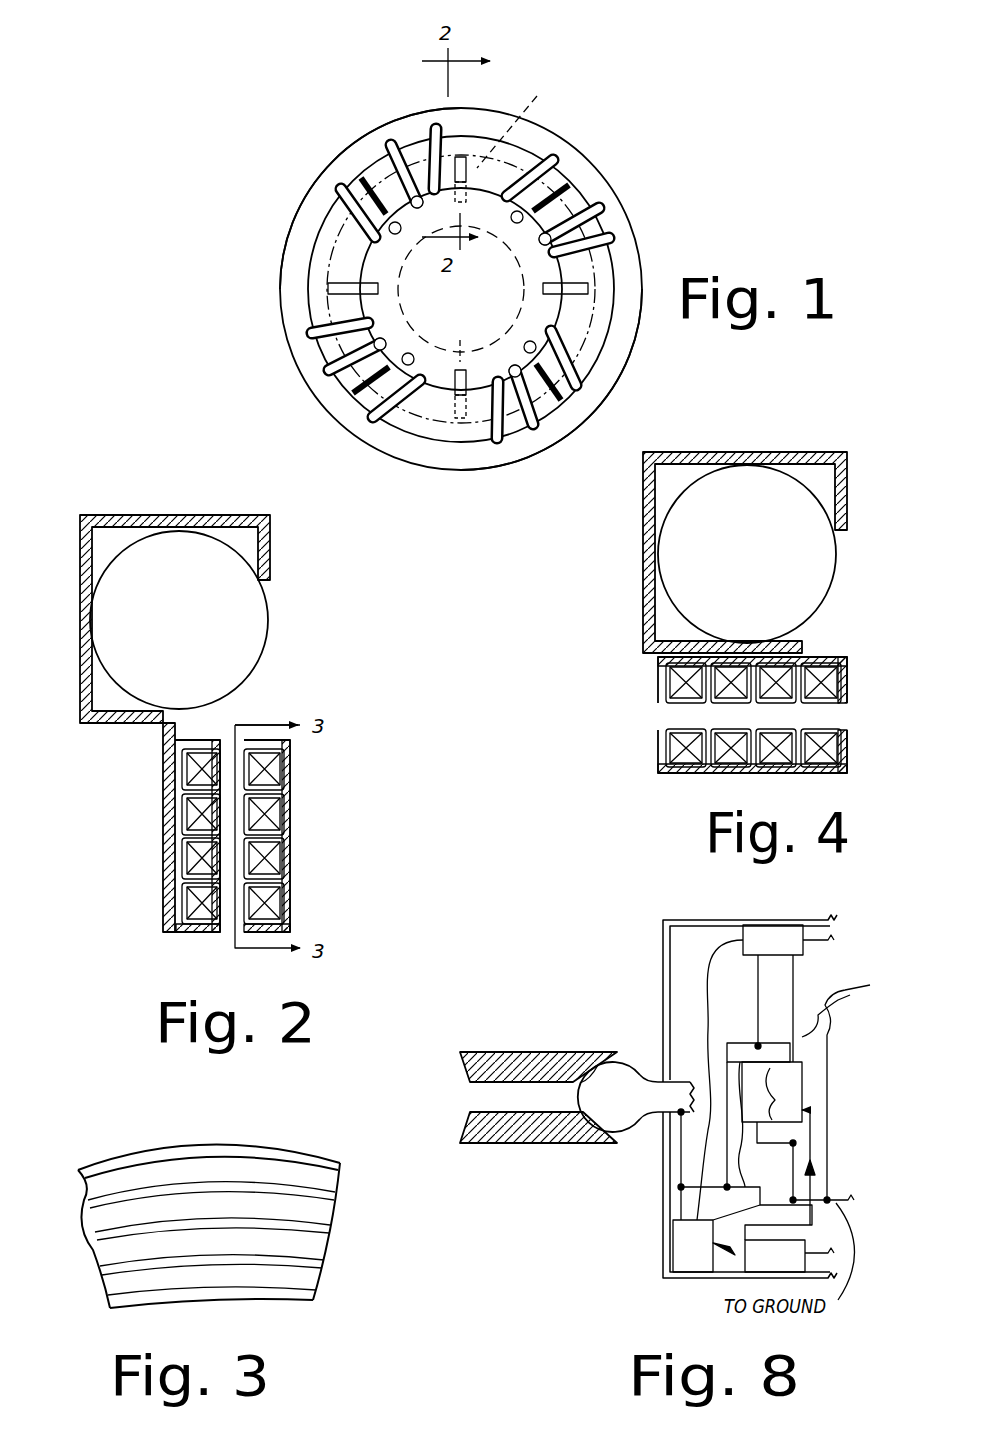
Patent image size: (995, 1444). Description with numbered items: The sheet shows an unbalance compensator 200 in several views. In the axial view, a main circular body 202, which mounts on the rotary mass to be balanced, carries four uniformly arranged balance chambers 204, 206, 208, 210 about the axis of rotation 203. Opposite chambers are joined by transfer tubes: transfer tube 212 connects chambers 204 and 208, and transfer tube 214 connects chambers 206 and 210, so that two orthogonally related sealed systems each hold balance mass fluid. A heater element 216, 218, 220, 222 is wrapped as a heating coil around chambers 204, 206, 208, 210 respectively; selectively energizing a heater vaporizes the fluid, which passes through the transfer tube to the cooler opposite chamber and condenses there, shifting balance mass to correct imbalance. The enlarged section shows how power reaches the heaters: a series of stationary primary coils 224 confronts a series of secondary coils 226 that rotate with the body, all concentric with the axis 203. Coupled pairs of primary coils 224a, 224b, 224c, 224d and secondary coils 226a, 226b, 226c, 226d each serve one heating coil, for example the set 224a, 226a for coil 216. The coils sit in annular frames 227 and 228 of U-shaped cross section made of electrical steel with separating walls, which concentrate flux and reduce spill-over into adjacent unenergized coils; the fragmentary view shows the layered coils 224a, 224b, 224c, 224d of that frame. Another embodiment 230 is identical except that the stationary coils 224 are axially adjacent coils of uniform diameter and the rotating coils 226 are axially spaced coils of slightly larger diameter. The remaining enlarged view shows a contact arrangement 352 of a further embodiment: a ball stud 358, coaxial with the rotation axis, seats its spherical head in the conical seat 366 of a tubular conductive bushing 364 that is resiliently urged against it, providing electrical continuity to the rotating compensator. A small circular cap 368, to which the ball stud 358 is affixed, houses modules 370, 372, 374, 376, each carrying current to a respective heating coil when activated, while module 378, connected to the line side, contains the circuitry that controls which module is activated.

In FIG. 1, the unbalance compensator 200 is at (722, 208).
In FIG. 2, the unbalance compensator 200 is at (155, 695).
In FIG. 1, the main circular body 202 is at (594, 190).
In FIG. 2, the main circular body 202 is at (135, 522).
In FIG. 1, the axis of rotation 203 is at (455, 287).
In FIG. 1, the balance chamber 204 is at (513, 165).
In FIG. 2, the balance chamber 204 is at (268, 620).
In FIG. 4, the balance chamber 204 is at (830, 580).
In FIG. 1, the balance chamber 206 is at (600, 366).
In FIG. 1, the balance chamber 208 is at (452, 445).
In FIG. 1, the balance chamber 210 is at (318, 236).
In FIG. 1, the transfer tube 212 is at (522, 115).
In FIG. 1, the transfer tube 214 is at (600, 262).
In FIG. 1, the heater element 216 is at (565, 162).
In FIG. 1, the heater element 218 is at (587, 405).
In FIG. 1, the heater element 220 is at (370, 430).
In FIG. 1, the heater element 222 is at (343, 184).
In FIG. 2, the primary coils 224 is at (315, 798).
In FIG. 4, the primary coils 224 is at (658, 770).
In FIG. 2, the primary coil 224a is at (265, 775).
In FIG. 3, the primary coil 224a is at (318, 1178).
In FIG. 2, the primary coil 224b is at (275, 818).
In FIG. 3, the primary coil 224b is at (320, 1213).
In FIG. 2, the primary coil 224c is at (275, 862).
In FIG. 3, the primary coil 224c is at (316, 1253).
In FIG. 2, the primary coil 224d is at (275, 905).
In FIG. 3, the primary coil 224d is at (310, 1288).
In FIG. 2, the secondary coils 226 is at (148, 862).
In FIG. 4, the secondary coils 226 is at (656, 684).
In FIG. 2, the secondary coil 226a is at (200, 766).
In FIG. 2, the secondary coil 226b is at (200, 812).
In FIG. 2, the secondary coil 226c is at (200, 856).
In FIG. 2, the secondary coil 226d is at (200, 900).
In FIG. 2, the annular frame 227 is at (290, 930).
In FIG. 2, the annular frame 228 is at (180, 925).
In FIG. 4, the unbalance compensator embodiment 230 is at (630, 605).
In FIG. 8, the contact arrangement 352 is at (577, 1056).
In FIG. 8, the ball stud 358 is at (626, 1122).
In FIG. 8, the conductive bushing 364 is at (504, 1052).
In FIG. 8, the conical seat 366 is at (622, 1060).
In FIG. 8, the circular cap 368 is at (658, 918).
In FIG. 8, the module 370 is at (768, 938).
In FIG. 8, the module 372 is at (755, 1082).
In FIG. 8, the module 374 is at (760, 1258).
In FIG. 8, the module 376 is at (790, 1085).
In FIG. 8, the module 378 is at (683, 1252).